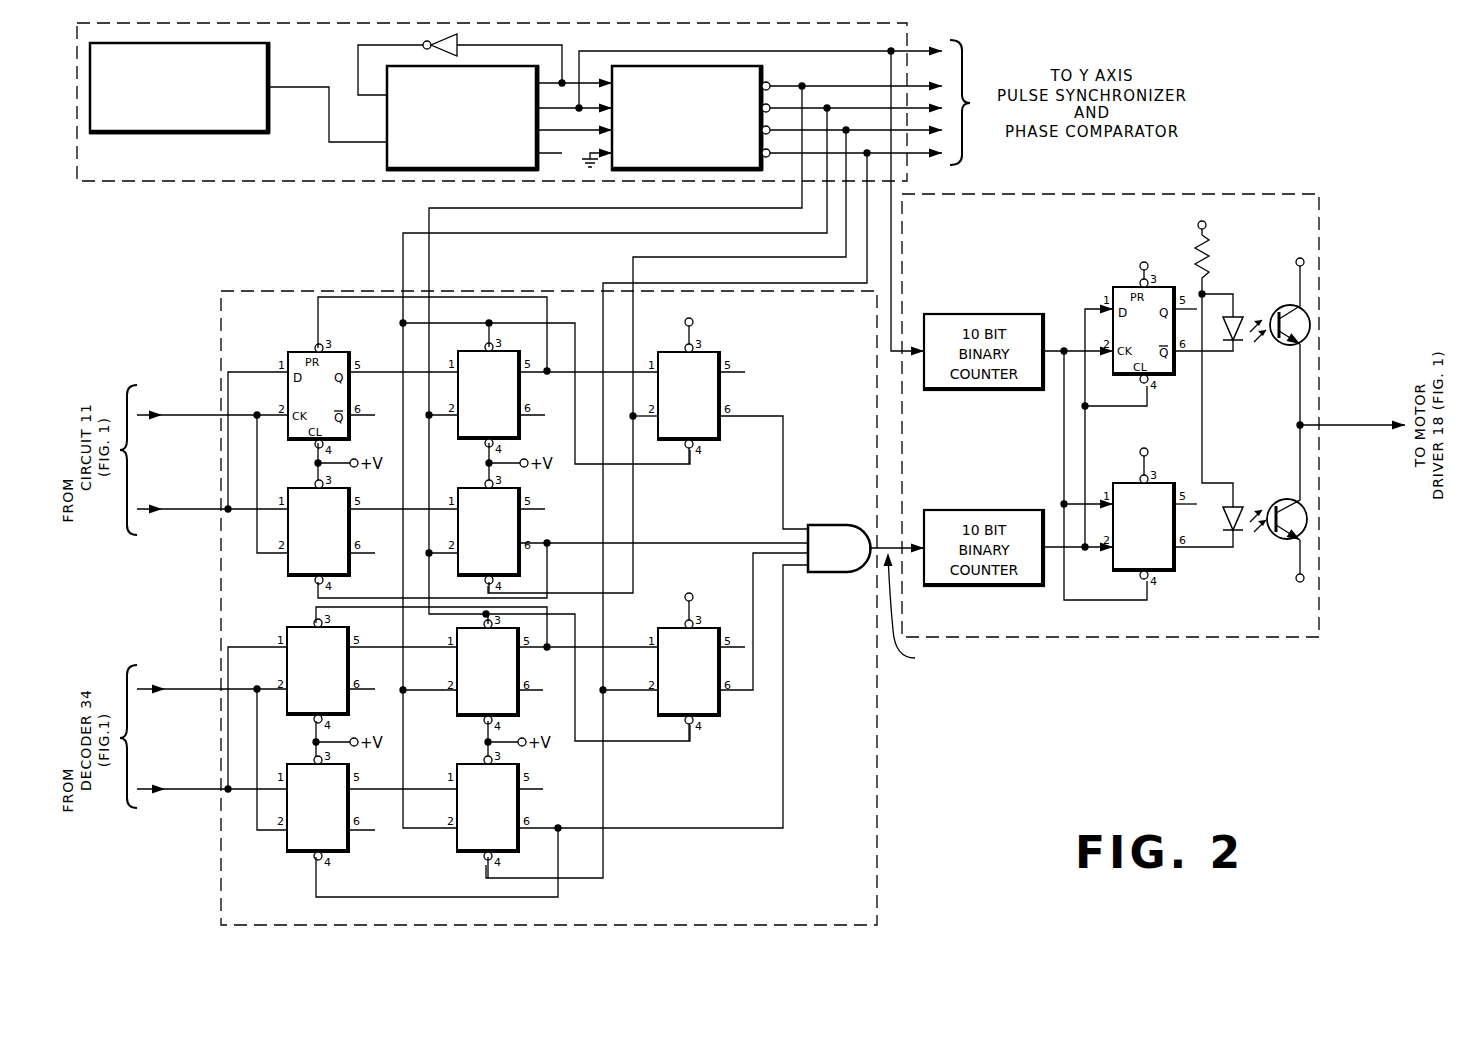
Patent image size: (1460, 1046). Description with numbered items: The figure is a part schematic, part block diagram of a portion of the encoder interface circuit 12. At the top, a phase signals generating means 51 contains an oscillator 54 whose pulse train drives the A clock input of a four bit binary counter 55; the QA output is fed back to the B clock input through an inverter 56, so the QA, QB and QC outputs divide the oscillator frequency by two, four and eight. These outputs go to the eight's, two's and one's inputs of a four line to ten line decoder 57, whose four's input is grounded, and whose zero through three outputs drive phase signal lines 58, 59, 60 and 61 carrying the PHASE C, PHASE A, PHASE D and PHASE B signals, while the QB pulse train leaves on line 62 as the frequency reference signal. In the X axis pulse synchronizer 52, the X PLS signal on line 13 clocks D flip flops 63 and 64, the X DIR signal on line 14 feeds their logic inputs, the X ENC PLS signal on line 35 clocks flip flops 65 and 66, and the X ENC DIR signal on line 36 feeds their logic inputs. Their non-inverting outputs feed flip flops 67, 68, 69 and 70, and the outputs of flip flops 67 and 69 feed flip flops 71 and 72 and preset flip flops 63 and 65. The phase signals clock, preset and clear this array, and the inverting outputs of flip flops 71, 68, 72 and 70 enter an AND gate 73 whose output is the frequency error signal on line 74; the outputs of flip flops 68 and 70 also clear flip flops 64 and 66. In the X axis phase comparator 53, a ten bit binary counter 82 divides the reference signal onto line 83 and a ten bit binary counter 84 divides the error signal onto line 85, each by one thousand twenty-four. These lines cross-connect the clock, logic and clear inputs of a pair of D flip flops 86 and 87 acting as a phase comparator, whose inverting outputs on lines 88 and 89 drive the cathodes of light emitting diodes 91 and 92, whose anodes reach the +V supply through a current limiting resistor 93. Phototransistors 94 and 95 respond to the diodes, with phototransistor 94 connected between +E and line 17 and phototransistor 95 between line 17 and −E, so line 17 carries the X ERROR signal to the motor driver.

The encoder interface circuit 12 is at (1270, 652).
The line 13 is at (195, 418).
The line 14 is at (188, 512).
The line 17 is at (1362, 428).
The line 35 is at (190, 695).
The line 36 is at (186, 795).
The phase signals generating means 51 is at (200, 183).
The X axis pulse synchronizer 52 is at (218, 898).
The X axis phase comparator 53 is at (1160, 640).
The oscillator 54 is at (270, 53).
The four bit binary counter 55 is at (400, 175).
The inverter 56 is at (458, 33).
The four line to ten line decoder 57 is at (640, 172).
The phase signal line 58 is at (475, 207).
The phase signal line 59 is at (486, 236).
The phase signal line 60 is at (633, 257).
The phase signal line 61 is at (602, 283).
The line 62 is at (905, 218).
The D flip flop 63 is at (330, 404).
The D flip flop 64 is at (330, 542).
The D flip flop 65 is at (329, 680).
The D flip flop 66 is at (329, 817).
The D flip flop 67 is at (500, 403).
The D flip flop 68 is at (500, 542).
The D flip flop 69 is at (499, 681).
The D flip flop 70 is at (499, 817).
The D flip flop 71 is at (700, 404).
The D flip flop 72 is at (700, 681).
The AND gate 73 is at (840, 558).
The line 74 is at (893, 548).
The ten bit binary counter 82 is at (978, 315).
The line 83 is at (1055, 349).
The ten bit binary counter 84 is at (1000, 512).
The line 85 is at (1054, 551).
The D flip flop 86 is at (1155, 339).
The D flip flop 87 is at (1155, 536).
The line 88 is at (1218, 353).
The line 89 is at (1200, 549).
The light emitting diode 91 is at (1243, 342).
The light emitting diode 92 is at (1240, 533).
The current limiting resistor 93 is at (1209, 258).
The phototransistor 94 is at (1305, 318).
The phototransistor 95 is at (1306, 515).